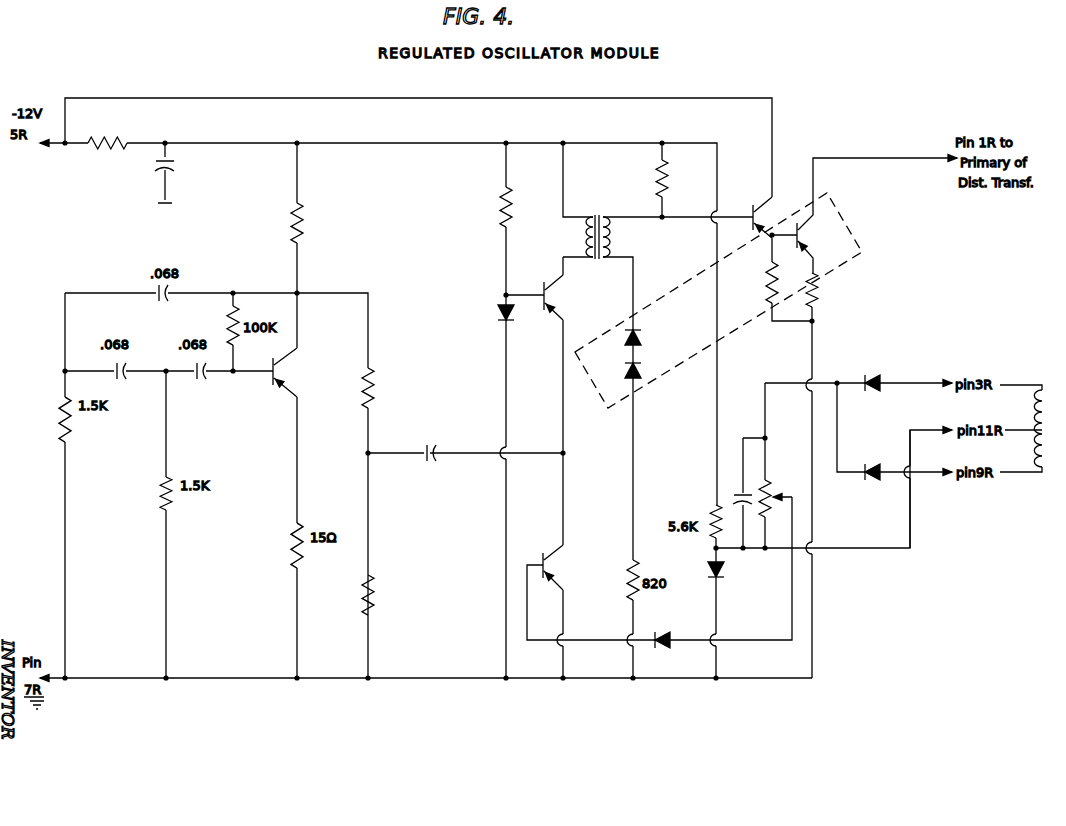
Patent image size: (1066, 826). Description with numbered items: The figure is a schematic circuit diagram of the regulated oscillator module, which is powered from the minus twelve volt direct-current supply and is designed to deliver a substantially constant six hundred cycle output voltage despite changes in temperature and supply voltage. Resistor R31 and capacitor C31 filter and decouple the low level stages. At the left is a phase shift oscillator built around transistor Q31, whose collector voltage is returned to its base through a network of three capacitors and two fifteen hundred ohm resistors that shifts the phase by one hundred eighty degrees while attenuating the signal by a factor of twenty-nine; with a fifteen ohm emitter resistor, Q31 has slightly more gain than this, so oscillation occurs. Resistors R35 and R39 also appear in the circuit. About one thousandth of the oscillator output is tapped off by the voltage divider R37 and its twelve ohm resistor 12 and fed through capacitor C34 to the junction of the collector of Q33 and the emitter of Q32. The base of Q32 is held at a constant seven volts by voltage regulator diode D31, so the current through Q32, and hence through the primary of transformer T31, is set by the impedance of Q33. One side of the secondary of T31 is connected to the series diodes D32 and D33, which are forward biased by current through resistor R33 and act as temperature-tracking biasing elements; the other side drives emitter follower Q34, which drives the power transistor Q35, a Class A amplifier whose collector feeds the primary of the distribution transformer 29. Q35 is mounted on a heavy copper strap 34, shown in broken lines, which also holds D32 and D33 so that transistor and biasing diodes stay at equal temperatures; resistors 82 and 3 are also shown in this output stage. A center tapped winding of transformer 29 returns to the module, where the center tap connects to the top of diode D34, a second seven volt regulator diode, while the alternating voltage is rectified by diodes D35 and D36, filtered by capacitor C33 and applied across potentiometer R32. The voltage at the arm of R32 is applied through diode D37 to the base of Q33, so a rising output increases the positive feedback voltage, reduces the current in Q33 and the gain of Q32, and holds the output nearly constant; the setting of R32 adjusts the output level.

The resistor R31 is at (89, 140).
The capacitor C31 is at (180, 170).
The resistor 1.5K R35 is at (304, 233).
The transistor Q31 is at (284, 377).
The voltage divider R37 is at (372, 389).
The twelve ohm resistor 12 is at (382, 595).
The capacitor C34 is at (422, 448).
The resistor 5.6K R39 is at (501, 195).
The voltage regulator diode D31 is at (496, 316).
The transistor Q32 is at (558, 310).
The transformer T31 is at (591, 210).
The resistor R33 is at (663, 184).
The driver transistor Q34 is at (770, 207).
The power transistor Q35 is at (803, 242).
The resistor 82 ohm 1/2W 82 is at (764, 279).
The resistor 3 ohm 10W 3 is at (821, 296).
The copper strap 34 is at (729, 300).
The biasing diode D32 is at (651, 342).
The biasing diode D33 is at (646, 459).
The transistor Q33 is at (558, 572).
The diode D37 is at (649, 634).
The voltage regulator diode D34 is at (721, 581).
The capacitor C33 is at (747, 495).
The potentiometer R32 is at (820, 517).
The rectifier diode D36 is at (867, 380).
The rectifier diode D35 is at (862, 465).
The distribution transformer 29 is at (1047, 392).